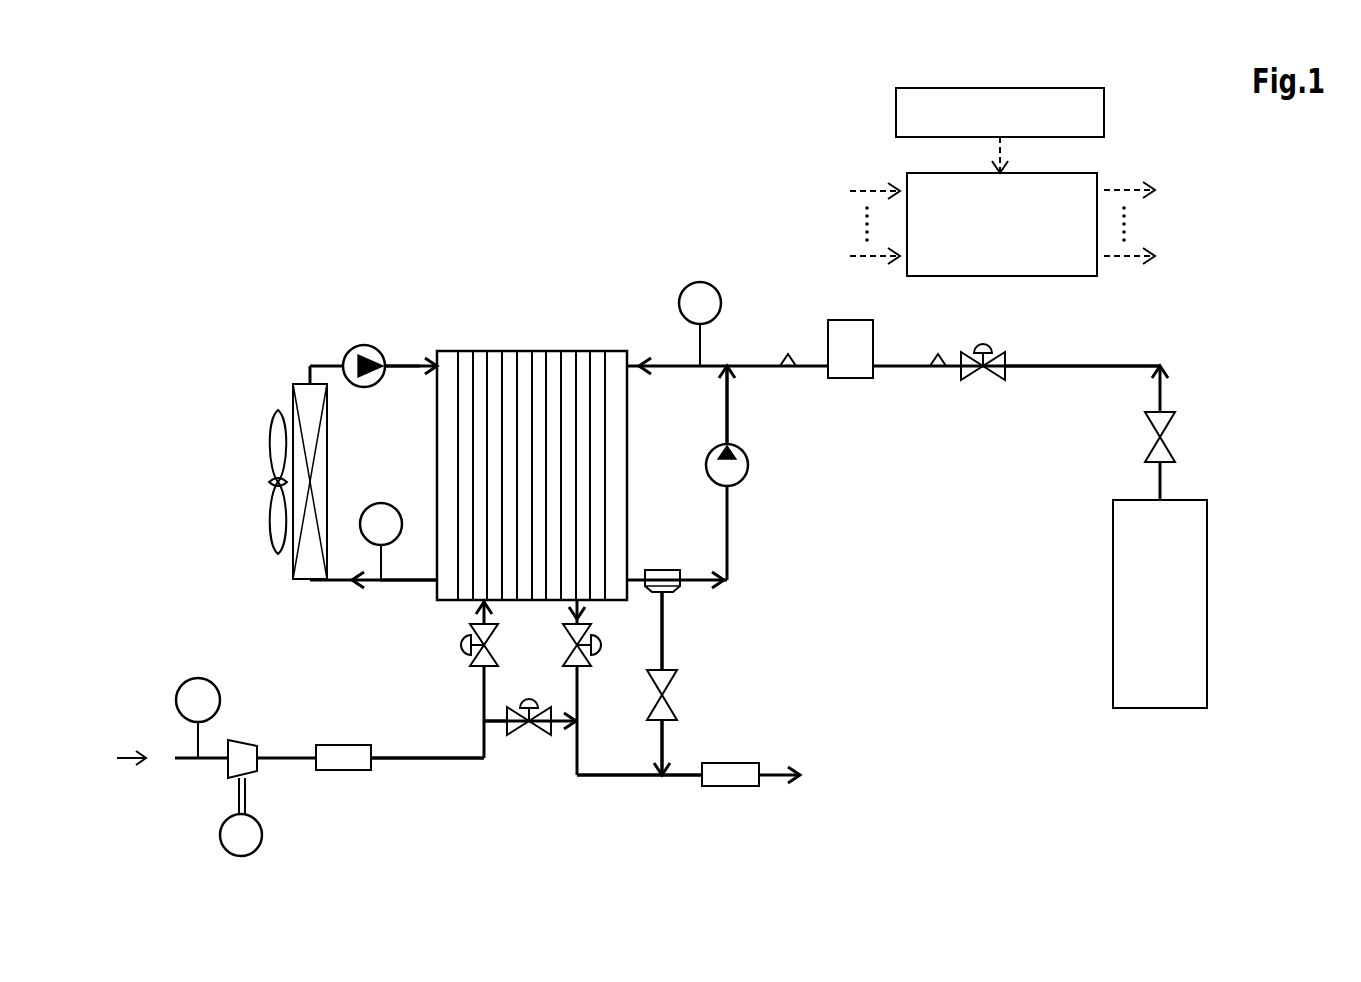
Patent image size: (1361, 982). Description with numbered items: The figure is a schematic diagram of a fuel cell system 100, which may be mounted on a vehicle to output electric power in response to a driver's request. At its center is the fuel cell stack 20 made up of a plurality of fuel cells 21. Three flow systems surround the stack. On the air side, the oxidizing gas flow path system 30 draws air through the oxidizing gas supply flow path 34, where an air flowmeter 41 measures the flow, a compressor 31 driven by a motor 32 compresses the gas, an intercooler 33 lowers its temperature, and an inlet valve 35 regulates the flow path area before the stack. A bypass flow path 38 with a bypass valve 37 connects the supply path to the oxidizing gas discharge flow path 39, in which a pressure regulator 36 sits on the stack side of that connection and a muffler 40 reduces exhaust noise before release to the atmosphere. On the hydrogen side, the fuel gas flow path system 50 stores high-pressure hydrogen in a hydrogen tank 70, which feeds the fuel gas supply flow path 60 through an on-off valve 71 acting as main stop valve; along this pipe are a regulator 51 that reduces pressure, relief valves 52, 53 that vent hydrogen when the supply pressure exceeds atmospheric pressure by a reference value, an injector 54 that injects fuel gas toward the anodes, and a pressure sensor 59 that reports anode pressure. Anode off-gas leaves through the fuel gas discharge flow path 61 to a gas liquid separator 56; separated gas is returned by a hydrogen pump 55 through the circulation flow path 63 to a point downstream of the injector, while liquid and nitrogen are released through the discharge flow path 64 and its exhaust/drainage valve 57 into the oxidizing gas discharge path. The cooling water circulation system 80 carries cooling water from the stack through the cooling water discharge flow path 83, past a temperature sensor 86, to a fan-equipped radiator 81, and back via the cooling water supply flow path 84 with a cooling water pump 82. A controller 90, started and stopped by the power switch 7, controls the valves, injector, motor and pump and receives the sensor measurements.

The fuel cell system 100 is at (1216, 150).
The fuel cell stack 20 is at (463, 315).
The fuel cells 21 is at (537, 350).
The oxidizing gas flow path system 30 is at (328, 670).
The compressor 31 is at (243, 740).
The motor 32 is at (257, 817).
The intercooler 33 is at (326, 745).
The oxidizing gas supply flow path 34 is at (438, 761).
The inlet valve 35 is at (458, 645).
The pressure regulator 36 is at (608, 643).
The bypass valve 37 is at (530, 734).
The bypass flow path 38 is at (494, 726).
The oxidizing gas discharge flow path 39 is at (609, 778).
The muffler 40 is at (747, 762).
The air flowmeter 41 is at (192, 678).
The fuel gas flow path system 50 is at (1208, 348).
The regulator 51 is at (1000, 350).
The relief valve 52 is at (938, 357).
The relief valve 53 is at (788, 357).
The injector 54 is at (841, 320).
The hydrogen pump 55 is at (748, 466).
The gas liquid separator 56 is at (667, 596).
The exhaust/drainage valve 57 is at (677, 707).
The pressure sensor 59 is at (701, 282).
The fuel gas supply flow path 60 is at (1078, 368).
The fuel gas discharge flow path 61 is at (647, 570).
The circulation flow path 63 is at (737, 414).
The discharge flow path 64 is at (665, 754).
The hydrogen tank 70 is at (1182, 500).
The on-off valve 71 is at (1150, 443).
The cooling water circulation system 80 is at (303, 340).
The radiator 81 is at (293, 388).
The cooling water pump 82 is at (364, 345).
The cooling water discharge flow path 83 is at (396, 583).
The cooling water supply flow path 84 is at (403, 356).
The temperature sensor 86 is at (382, 503).
The power switch 7 is at (1104, 100).
The controller 90 is at (1064, 173).